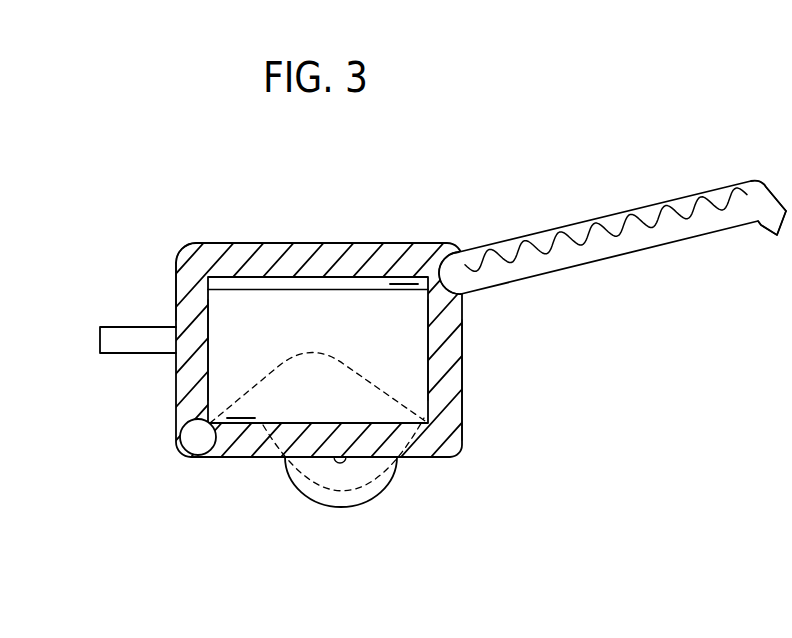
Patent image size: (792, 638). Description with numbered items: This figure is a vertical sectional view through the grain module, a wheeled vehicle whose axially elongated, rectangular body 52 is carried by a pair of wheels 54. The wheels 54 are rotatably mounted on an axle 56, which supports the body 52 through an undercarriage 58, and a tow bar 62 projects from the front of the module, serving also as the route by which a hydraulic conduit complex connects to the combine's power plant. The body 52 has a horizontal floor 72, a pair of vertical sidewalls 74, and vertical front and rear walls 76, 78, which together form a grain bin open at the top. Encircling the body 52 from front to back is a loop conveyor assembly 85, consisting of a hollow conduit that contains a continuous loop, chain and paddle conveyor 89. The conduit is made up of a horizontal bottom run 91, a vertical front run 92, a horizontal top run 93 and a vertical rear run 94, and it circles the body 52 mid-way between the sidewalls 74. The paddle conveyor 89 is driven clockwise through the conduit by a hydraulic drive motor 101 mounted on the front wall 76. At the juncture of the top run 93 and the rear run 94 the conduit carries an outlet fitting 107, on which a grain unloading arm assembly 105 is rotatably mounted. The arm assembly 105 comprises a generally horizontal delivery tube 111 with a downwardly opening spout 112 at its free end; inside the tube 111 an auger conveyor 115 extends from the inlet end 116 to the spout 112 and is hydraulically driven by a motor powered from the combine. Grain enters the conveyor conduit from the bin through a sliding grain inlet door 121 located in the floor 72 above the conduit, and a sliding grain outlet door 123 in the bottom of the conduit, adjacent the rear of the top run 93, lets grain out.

The body 52 is at (240, 296).
The wheels 54 is at (401, 487).
The axle 56 is at (341, 468).
The undercarriage 58 is at (354, 489).
The tow bar 62 is at (162, 347).
The floor 72 is at (426, 421).
The sidewalls 74 is at (283, 297).
The front wall 76 is at (211, 345).
The rear wall 78 is at (318, 350).
The loop conveyor assembly 85 is at (447, 353).
The continuous loop, chain and paddle conveyor 89 is at (178, 257).
The horizontal bottom run 91 is at (242, 452).
The vertical front run 92 is at (176, 262).
The horizontal top run 93 is at (312, 268).
The vertical rear run 94 is at (455, 402).
The hydraulic drive motor 101 is at (189, 446).
The grain unloading arm assembly 105 is at (578, 222).
The outlet fitting 107 is at (412, 243).
The delivery tube 111 is at (728, 184).
The spout 112 is at (765, 237).
The auger conveyor 115 is at (648, 222).
The inlet end 116 is at (468, 293).
The sliding grain inlet door 121 is at (243, 418).
The sliding grain outlet door 123 is at (405, 288).